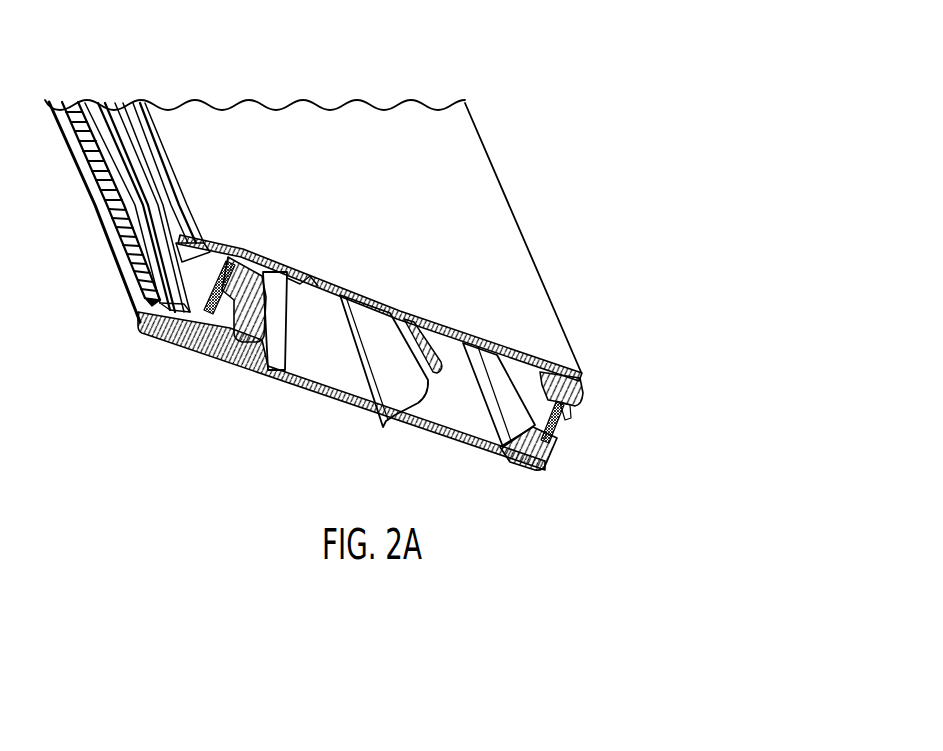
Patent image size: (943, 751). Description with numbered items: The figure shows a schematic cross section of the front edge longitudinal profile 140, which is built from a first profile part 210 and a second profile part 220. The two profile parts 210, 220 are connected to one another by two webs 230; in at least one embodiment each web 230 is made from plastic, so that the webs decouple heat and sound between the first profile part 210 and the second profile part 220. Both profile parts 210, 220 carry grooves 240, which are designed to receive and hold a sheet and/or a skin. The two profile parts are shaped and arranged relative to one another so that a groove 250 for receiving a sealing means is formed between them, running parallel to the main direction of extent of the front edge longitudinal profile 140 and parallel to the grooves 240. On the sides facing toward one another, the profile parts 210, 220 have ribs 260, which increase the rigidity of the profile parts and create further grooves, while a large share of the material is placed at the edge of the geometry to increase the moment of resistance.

The front edge longitudinal profile 140 is at (543, 75).
The first profile part 210 is at (580, 370).
The second profile part 220 is at (556, 458).
The web 230 is at (233, 248).
The groove 240 is at (150, 242).
The groove for receiving a sealing means 250 is at (163, 283).
The rib 260 is at (478, 340).